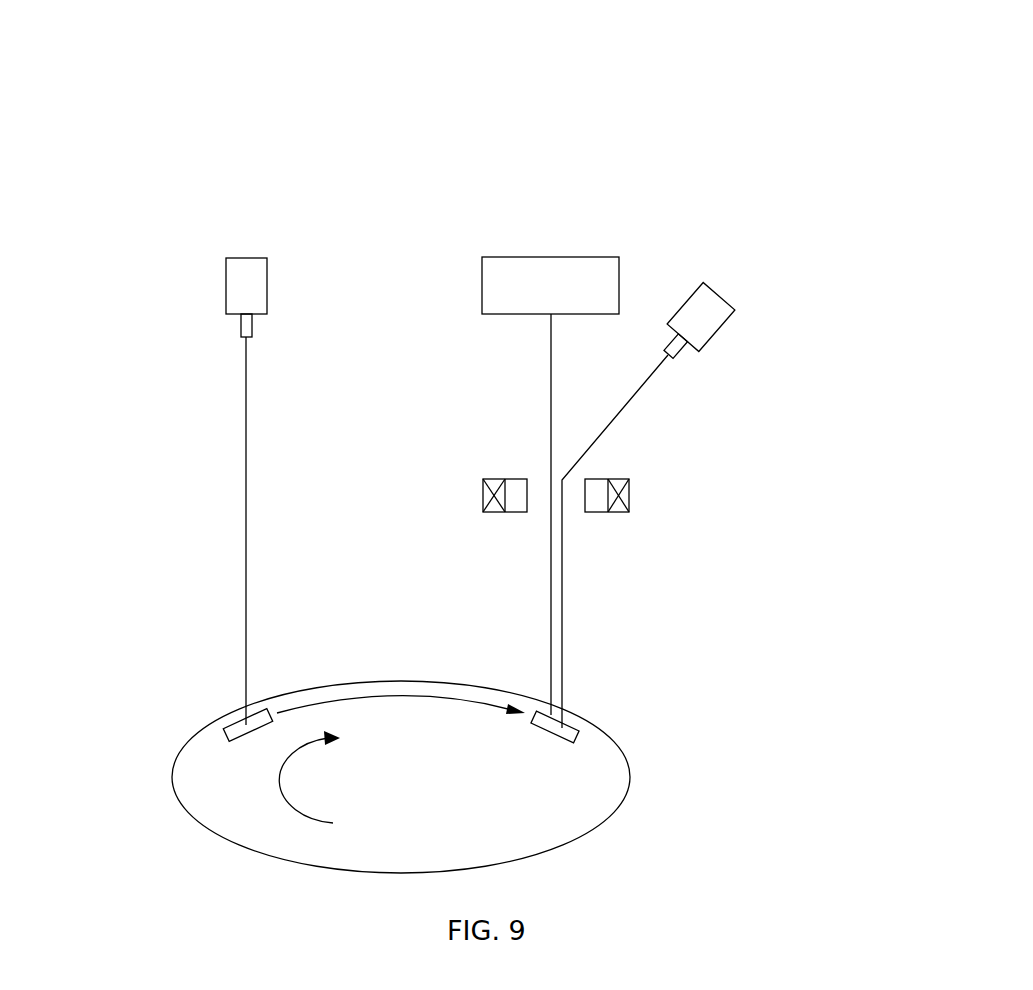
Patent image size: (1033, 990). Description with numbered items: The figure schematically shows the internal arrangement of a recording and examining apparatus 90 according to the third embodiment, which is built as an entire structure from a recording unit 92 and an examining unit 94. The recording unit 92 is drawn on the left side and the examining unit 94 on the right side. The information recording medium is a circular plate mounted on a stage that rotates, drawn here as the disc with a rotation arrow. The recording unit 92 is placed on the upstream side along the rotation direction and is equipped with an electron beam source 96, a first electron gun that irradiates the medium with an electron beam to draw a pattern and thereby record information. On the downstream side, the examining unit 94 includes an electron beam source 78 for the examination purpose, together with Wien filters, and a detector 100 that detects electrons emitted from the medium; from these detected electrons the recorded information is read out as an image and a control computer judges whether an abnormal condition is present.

The examining apparatus 90 is at (143, 117).
The recording unit 92 is at (168, 312).
The examining unit 94 is at (694, 203).
The electron beam source 96 is at (247, 258).
The detector 100 is at (552, 257).
The examining-purpose beam source 78 is at (765, 405).